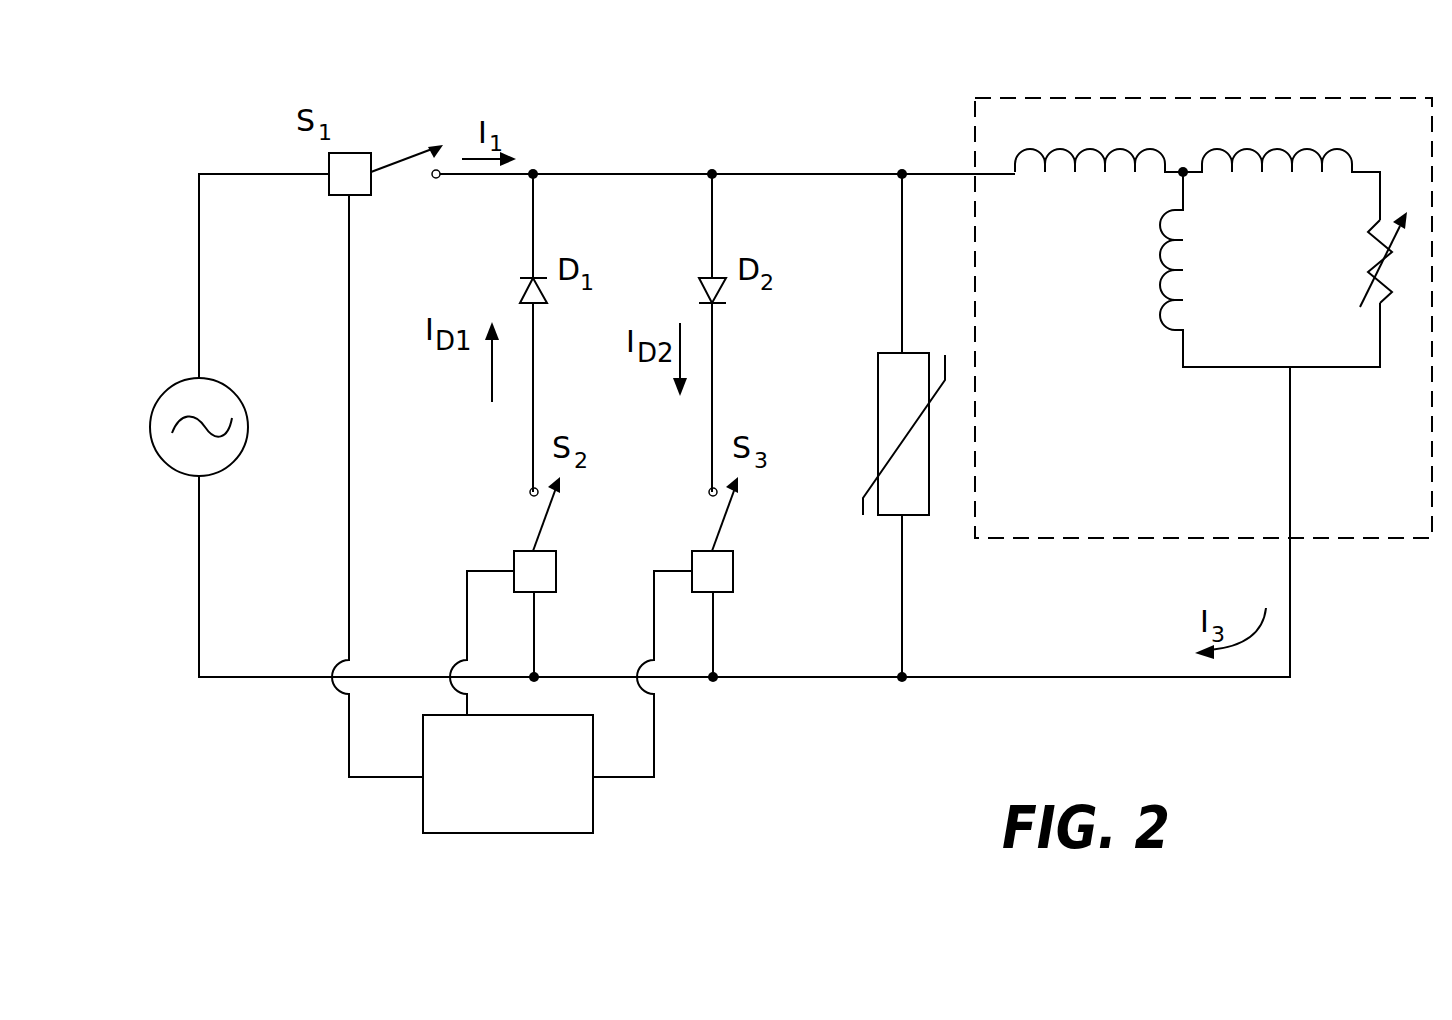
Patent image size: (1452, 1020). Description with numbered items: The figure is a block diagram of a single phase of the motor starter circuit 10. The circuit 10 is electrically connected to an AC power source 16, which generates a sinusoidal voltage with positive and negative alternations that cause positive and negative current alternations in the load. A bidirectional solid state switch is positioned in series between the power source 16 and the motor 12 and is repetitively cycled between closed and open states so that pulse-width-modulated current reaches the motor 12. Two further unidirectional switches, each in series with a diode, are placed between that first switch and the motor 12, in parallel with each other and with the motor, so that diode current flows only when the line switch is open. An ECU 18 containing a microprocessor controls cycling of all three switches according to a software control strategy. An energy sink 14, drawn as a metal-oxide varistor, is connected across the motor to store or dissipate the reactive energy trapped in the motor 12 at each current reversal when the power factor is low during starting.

The motor starter circuit 10 is at (843, 110).
The motor 12 is at (1353, 538).
The energy sink 14 is at (878, 368).
The AC power source 16 is at (167, 393).
The ECU 18 is at (448, 835).